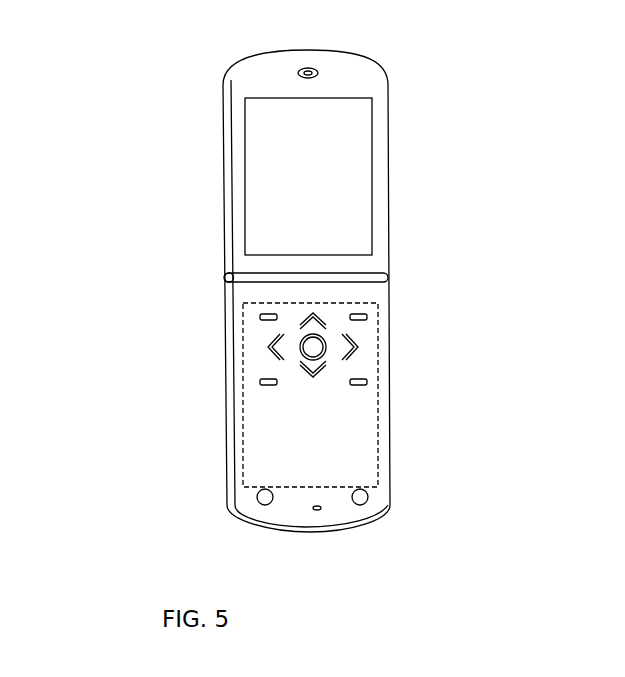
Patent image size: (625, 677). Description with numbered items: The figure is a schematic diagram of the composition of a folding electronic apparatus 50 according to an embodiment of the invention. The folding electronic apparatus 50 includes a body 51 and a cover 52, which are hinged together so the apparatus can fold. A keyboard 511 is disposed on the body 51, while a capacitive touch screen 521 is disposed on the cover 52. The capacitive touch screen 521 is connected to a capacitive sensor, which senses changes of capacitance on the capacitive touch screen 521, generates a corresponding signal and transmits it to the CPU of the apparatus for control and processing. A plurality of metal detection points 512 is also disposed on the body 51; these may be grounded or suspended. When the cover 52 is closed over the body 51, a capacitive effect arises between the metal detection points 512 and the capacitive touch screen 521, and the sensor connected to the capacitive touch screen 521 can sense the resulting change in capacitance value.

The folding electronic apparatus 50 is at (170, 110).
The cover 52 is at (392, 150).
The capacitive touch screen 521 is at (262, 163).
The body 51 is at (393, 355).
The keyboard 511 is at (255, 364).
The metal detection points 512 is at (277, 502).